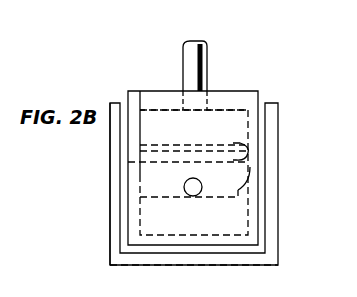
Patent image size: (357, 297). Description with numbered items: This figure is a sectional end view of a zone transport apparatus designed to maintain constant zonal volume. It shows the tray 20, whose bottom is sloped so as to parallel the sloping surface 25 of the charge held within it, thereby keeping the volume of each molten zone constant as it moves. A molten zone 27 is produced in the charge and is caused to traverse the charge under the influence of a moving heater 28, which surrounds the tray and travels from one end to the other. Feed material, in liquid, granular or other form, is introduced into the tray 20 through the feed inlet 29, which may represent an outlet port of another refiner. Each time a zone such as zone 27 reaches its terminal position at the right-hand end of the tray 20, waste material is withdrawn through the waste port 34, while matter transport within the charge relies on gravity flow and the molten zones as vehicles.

The tray 20 is at (262, 98).
The sloping surface of charge 25 is at (250, 178).
The zone 27 is at (246, 151).
The heater 28 is at (116, 243).
The feed inlet 29 is at (206, 52).
The waste port 34 is at (198, 196).